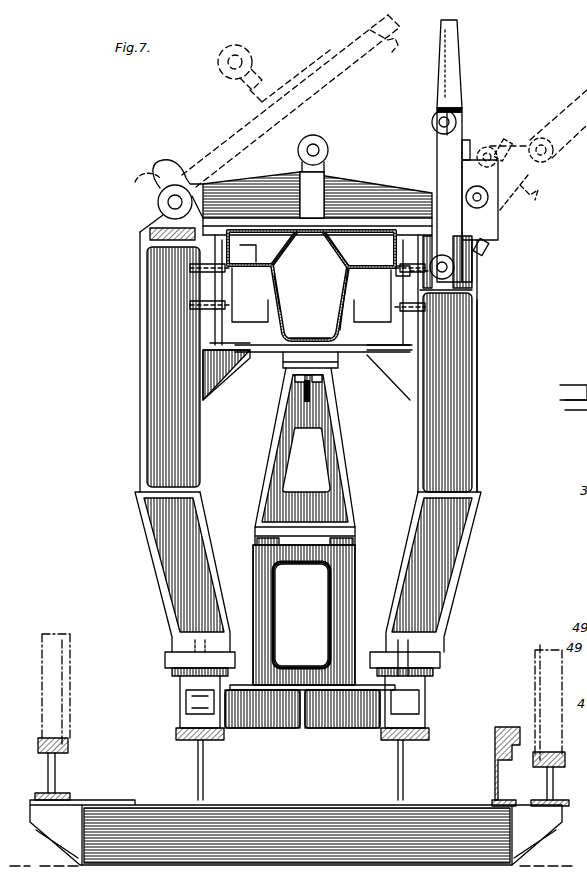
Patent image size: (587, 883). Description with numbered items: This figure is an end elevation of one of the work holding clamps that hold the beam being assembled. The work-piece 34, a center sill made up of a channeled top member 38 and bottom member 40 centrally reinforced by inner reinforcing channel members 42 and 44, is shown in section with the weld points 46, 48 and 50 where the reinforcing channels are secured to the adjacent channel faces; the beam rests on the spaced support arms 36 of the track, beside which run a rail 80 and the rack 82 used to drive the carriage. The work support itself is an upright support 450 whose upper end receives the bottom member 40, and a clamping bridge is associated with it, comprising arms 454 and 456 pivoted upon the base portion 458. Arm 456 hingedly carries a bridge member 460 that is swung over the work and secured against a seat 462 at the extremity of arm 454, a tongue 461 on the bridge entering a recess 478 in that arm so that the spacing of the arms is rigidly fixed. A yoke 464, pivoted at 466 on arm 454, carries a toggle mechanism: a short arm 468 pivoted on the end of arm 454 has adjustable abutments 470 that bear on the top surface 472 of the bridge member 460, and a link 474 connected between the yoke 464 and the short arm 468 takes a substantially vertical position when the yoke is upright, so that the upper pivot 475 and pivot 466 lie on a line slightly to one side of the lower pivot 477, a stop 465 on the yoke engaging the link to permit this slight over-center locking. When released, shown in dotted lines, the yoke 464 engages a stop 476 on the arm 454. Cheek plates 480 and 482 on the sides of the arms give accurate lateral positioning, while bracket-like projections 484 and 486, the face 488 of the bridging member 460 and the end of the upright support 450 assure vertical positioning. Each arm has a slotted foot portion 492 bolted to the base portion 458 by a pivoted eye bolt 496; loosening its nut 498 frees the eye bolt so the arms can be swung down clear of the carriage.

The work-piece 34 is at (272, 348).
The support arms 36 is at (486, 490).
The top member 38 is at (340, 240).
The bottom member 40 is at (350, 305).
The inner reinforcing channel member 42 is at (290, 256).
The inner reinforcing channel member 44 is at (316, 338).
The weld point 46 is at (287, 245).
The weld point 48 is at (253, 251).
The weld point 50 is at (335, 250).
The rail 80 is at (72, 718).
The rack 82 is at (494, 738).
The upright support 450 is at (330, 475).
The arm 454 is at (455, 405).
The arm 456 is at (160, 470).
The base portion 458 is at (270, 722).
The bridge member 460 is at (222, 116).
The tongue 461 is at (392, 52).
The seat 462 is at (350, 243).
The yoke 464 is at (458, 48).
The stop 465 is at (536, 202).
The pivot 466 is at (456, 275).
The short arm 468 is at (470, 150).
The adjustable abutment 470 is at (494, 146).
The top surface 472 is at (418, 188).
The link 474 is at (516, 145).
The upper pivot 475 is at (450, 112).
The stop 476 is at (490, 248).
The lower pivot 477 is at (458, 118).
The recess 478 is at (412, 270).
The cheek plate 480 is at (222, 285).
The cheek plate 482 is at (440, 330).
The bracket-like projection 484 is at (222, 362).
The bracket-like projection 486 is at (395, 372).
The face 488 is at (215, 238).
The foot portion 492 is at (168, 658).
The eye bolt 496 is at (182, 686).
The nut 498 is at (410, 650).